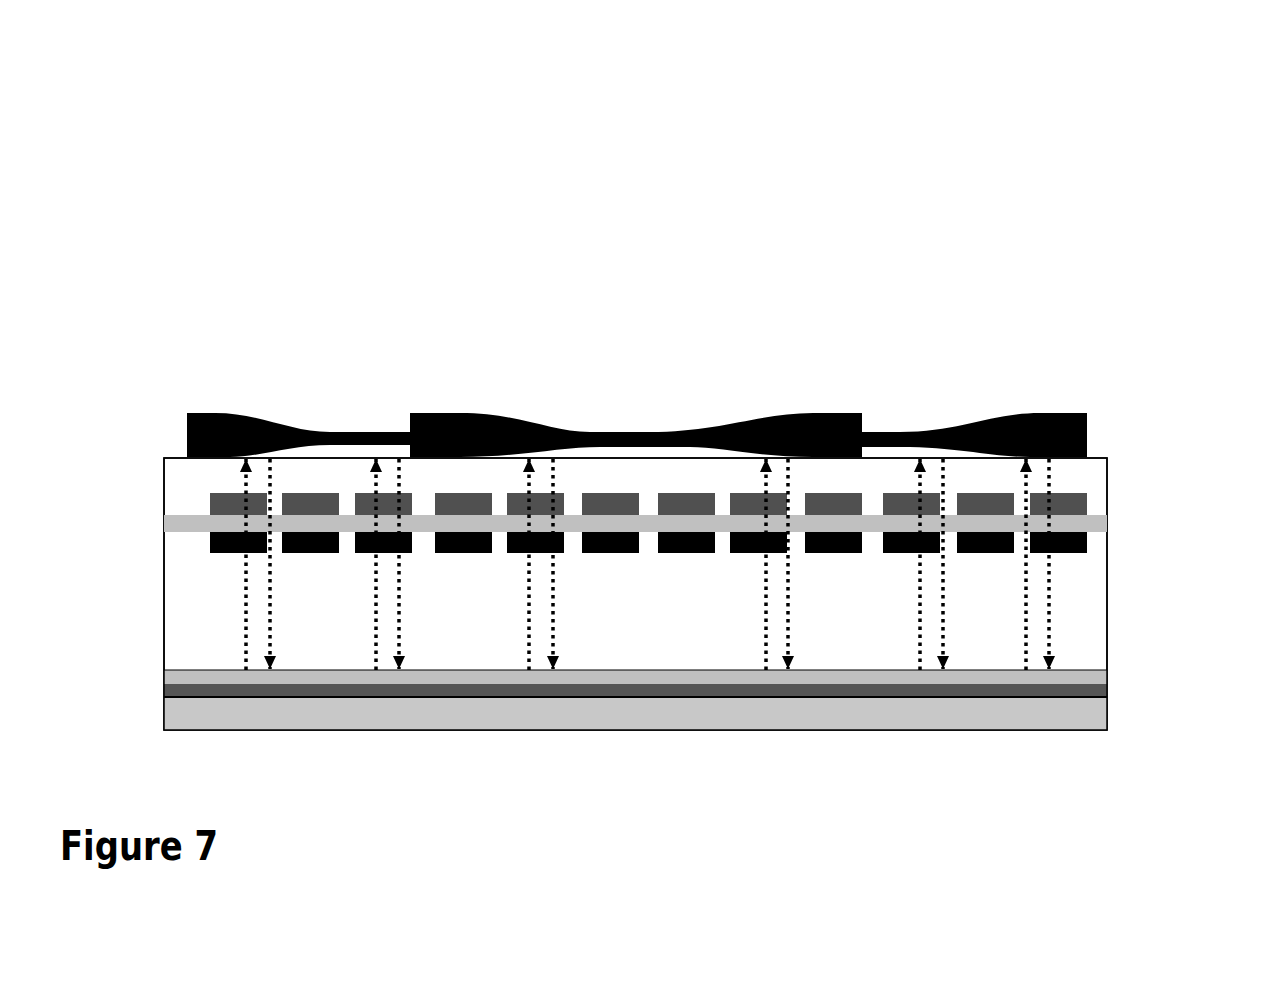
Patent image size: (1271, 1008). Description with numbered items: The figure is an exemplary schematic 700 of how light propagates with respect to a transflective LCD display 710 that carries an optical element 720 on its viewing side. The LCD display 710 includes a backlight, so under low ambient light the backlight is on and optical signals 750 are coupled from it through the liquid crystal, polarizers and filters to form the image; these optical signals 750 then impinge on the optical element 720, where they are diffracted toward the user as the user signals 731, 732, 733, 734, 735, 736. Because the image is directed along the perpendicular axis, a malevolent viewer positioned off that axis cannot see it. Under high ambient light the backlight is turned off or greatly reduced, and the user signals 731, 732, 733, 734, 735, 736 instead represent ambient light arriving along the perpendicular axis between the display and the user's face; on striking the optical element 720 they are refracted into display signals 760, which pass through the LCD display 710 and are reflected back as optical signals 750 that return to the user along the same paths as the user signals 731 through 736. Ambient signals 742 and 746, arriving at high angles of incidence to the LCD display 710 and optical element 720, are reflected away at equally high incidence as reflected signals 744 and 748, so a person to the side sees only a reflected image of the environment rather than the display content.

The exemplary schematic 700 is at (652, 575).
The LCD display 710 is at (1107, 730).
The optical element 720 is at (1085, 412).
The user signal 731 is at (248, 420).
The user signal 732 is at (379, 430).
The user signal 733 is at (530, 428).
The user signal 734 is at (763, 427).
The user signal 735 is at (917, 426).
The user signal 736 is at (1023, 417).
The ambient signal 742 is at (282, 422).
The reflected signal 744 is at (287, 418).
The ambient signal 746 is at (993, 418).
The reflected signal 748 is at (975, 418).
The optical signal 750 is at (235, 612).
The display signal 760 is at (282, 611).